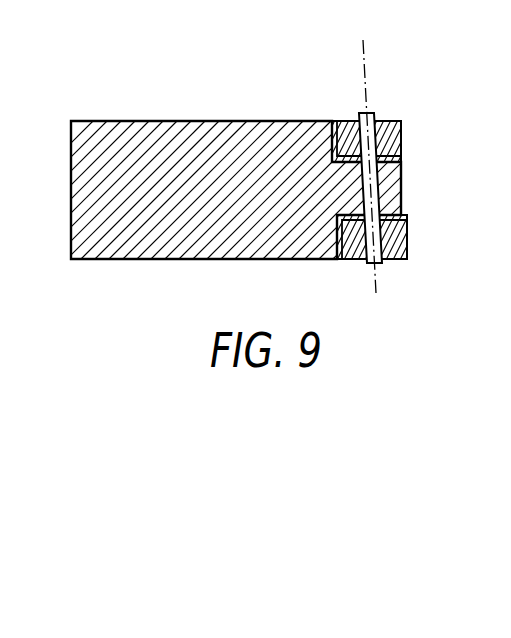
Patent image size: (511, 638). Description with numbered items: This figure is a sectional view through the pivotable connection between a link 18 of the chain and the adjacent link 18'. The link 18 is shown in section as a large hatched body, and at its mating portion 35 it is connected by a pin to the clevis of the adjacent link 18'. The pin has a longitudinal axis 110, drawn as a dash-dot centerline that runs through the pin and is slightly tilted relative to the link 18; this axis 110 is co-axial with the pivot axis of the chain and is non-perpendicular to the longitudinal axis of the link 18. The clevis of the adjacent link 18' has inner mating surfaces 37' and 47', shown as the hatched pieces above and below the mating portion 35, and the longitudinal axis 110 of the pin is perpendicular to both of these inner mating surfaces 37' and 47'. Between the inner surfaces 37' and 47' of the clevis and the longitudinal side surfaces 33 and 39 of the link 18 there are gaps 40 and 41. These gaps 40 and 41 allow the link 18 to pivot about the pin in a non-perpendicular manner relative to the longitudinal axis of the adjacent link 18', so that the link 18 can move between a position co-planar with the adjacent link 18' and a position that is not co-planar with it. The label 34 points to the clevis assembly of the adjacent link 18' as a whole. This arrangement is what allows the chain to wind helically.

The link 18 is at (255, 165).
The adjacent link 18' is at (357, 112).
The longitudinal side surface 39 is at (347, 153).
The inner mating surface 37' is at (393, 131).
The gap 41 is at (402, 158).
The fastening assembly 34 is at (414, 173).
The mating portion 35 is at (384, 190).
The gap 40 is at (405, 214).
The inner mating surface 47' is at (410, 245).
The longitudinal side surface 33 is at (358, 232).
The longitudinal axis 110 is at (363, 48).